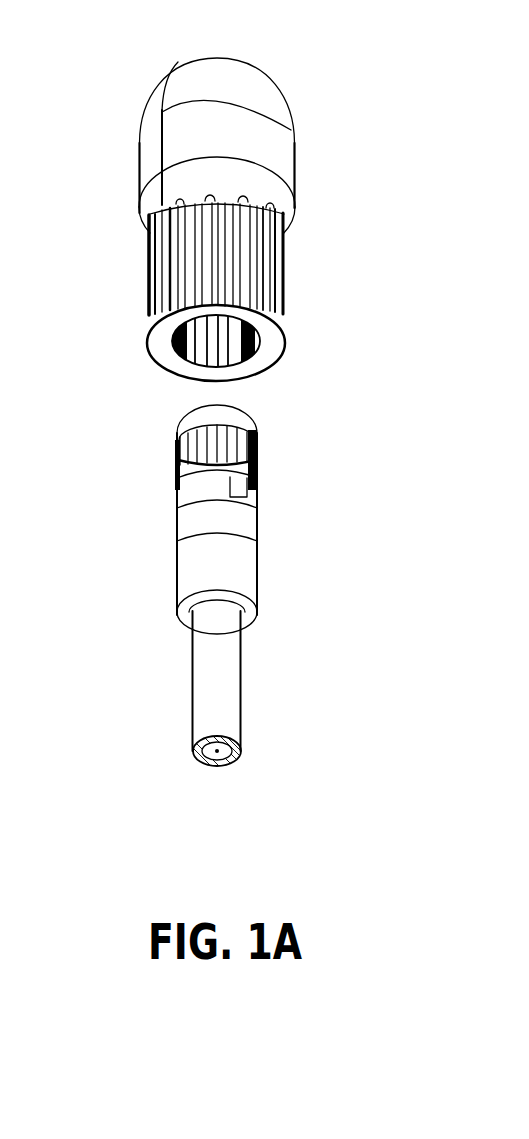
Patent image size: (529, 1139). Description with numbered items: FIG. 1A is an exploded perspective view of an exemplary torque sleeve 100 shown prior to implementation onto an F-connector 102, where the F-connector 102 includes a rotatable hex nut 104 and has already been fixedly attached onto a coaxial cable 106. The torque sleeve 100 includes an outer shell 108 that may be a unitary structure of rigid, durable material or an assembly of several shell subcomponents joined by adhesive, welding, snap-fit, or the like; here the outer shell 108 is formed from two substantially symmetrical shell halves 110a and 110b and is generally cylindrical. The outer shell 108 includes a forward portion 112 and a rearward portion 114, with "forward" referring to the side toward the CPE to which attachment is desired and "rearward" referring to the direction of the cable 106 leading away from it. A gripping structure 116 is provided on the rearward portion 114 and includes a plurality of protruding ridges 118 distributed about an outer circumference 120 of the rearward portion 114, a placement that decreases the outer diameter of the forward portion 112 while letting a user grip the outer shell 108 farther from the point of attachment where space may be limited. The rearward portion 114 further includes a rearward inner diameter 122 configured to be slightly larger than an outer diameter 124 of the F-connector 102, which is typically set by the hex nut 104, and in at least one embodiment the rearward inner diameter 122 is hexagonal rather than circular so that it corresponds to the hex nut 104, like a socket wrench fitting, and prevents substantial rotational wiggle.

The torque sleeve 100 is at (318, 99).
The F-connector 102 is at (301, 584).
The hex nut 104 is at (257, 463).
The coaxial cable 106 is at (242, 723).
The outer shell 108 is at (215, 57).
The shell half 110a is at (150, 110).
The shell half 110b is at (297, 157).
The forward portion 112 is at (123, 155).
The rearward portion 114 is at (122, 272).
The gripping structure 116 is at (303, 247).
The protruding ridges 118 is at (285, 287).
The outer circumference 120 is at (153, 350).
The rearward inner diameter 122 is at (250, 350).
The outer diameter 124 is at (177, 460).